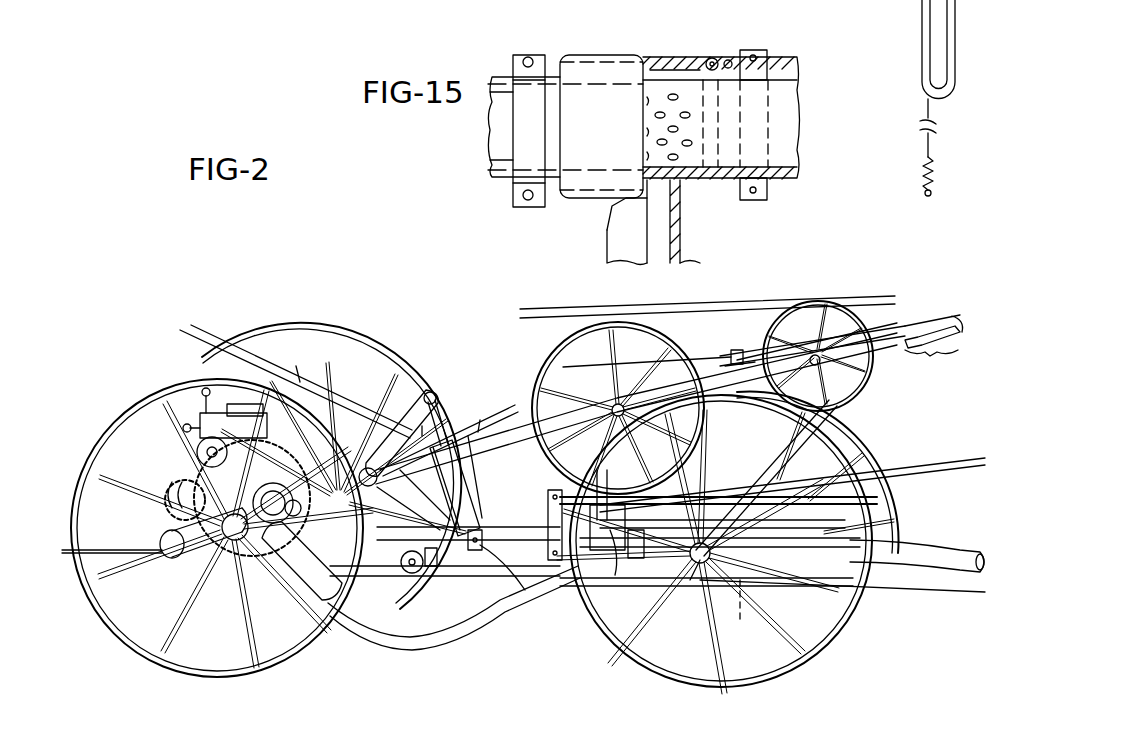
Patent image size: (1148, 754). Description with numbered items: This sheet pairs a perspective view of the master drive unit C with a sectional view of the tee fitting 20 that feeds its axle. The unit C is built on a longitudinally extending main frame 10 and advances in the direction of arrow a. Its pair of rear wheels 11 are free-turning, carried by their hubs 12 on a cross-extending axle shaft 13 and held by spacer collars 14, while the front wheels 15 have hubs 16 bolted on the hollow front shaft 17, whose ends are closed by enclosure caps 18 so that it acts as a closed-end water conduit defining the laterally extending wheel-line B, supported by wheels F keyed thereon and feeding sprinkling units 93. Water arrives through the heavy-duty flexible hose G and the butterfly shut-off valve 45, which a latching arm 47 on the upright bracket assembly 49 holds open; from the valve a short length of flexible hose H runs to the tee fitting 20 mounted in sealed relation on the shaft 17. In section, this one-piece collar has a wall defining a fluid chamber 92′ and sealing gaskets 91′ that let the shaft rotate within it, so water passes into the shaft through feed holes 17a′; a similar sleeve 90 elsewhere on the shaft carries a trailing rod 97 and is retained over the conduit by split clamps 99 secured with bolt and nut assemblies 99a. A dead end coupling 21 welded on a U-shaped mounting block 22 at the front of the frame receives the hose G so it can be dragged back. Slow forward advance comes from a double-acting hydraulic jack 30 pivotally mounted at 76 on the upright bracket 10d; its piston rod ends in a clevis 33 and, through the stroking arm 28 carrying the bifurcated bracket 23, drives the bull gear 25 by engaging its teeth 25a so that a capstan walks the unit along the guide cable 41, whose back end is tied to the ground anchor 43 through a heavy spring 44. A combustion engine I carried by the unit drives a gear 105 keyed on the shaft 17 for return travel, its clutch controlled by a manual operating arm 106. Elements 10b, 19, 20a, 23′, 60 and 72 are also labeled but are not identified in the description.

In FIG. 2, the main frame 10 is at (490, 540).
In FIG. 2, the frame bracket 10b is at (430, 570).
In FIG. 2, the upright mounting bracket 10d is at (474, 552).
In FIG. 2, the rear wheels 11 is at (882, 440).
In FIG. 2, the hubs 12 is at (694, 580).
In FIG. 2, the cross-extending axle shaft 13 is at (740, 612).
In FIG. 2, the spacer collars 14 is at (800, 522).
In FIG. 2, the front wheels 15 is at (120, 430).
In FIG. 2, the hubs 16 is at (235, 560).
In FIG. 15, the axle shaft 17 is at (785, 72).
In FIG. 2, the axle shaft 17 is at (910, 322).
In FIG. 15, the feed holes 17a′ is at (690, 82).
In FIG. 2, the enclosure caps 18 is at (170, 568).
In FIG. 2, the sprocket 19 is at (270, 492).
In FIG. 15, the tee fitting 20 is at (612, 56).
In FIG. 2, the tee fitting 20 is at (296, 507).
In FIG. 2, the hub body 20a is at (618, 560).
In FIG. 2, the dead end coupling 21 is at (170, 490).
In FIG. 2, the U-shaped mounting block 22 is at (165, 532).
In FIG. 2, the bifurcated bracket 23 is at (360, 440).
In FIG. 2, the cylinder 23′ is at (342, 515).
In FIG. 2, the bull gear 25 is at (290, 395).
In FIG. 2, the teeth 25a is at (318, 400).
In FIG. 2, the stroking arm 28 is at (384, 415).
In FIG. 2, the hydraulic jack 30 is at (470, 480).
In FIG. 2, the clevis 33 is at (438, 400).
In FIG. 2, the guide cable 41 is at (890, 590).
In FIG. 2, the ground anchor 43 is at (925, 196).
In FIG. 2, the heavy spring 44 is at (925, 170).
In FIG. 2, the butterfly shut-off valve 45 is at (625, 520).
In FIG. 2, the latching arm 47 is at (616, 492).
In FIG. 2, the mounting bracket assembly 49 is at (548, 522).
In FIG. 2, the hose fitting 60 is at (414, 612).
In FIG. 2, the hose fitting 72 is at (382, 620).
In FIG. 2, the pivot mounting 76 is at (512, 590).
In FIG. 2, the sleeve 90 is at (432, 424).
In FIG. 15, the sealing gaskets 91′ is at (718, 60).
In FIG. 15, the fluid chamber 92′ is at (650, 58).
In FIG. 2, the sprinkling units 93 is at (432, 395).
In FIG. 2, the trailing rod 97 is at (520, 440).
In FIG. 15, the split clamps 99 is at (515, 113).
In FIG. 15, the bolt and nut assemblies 99a is at (513, 197).
In FIG. 2, the gear 105 is at (248, 520).
In FIG. 2, the manual operating arm 106 is at (200, 405).
In FIG. 2, the wheel-line B is at (530, 402).
In FIG. 2, the master drive unit C is at (435, 300).
In FIG. 2, the wheels F is at (652, 326).
In FIG. 2, the flexible hose G is at (965, 548).
In FIG. 15, the short length of flexible hose H is at (682, 250).
In FIG. 2, the short length of flexible hose H is at (475, 618).
In FIG. 2, the combustion engine I is at (165, 400).
In FIG. 2, the arrow a is at (567, 684).